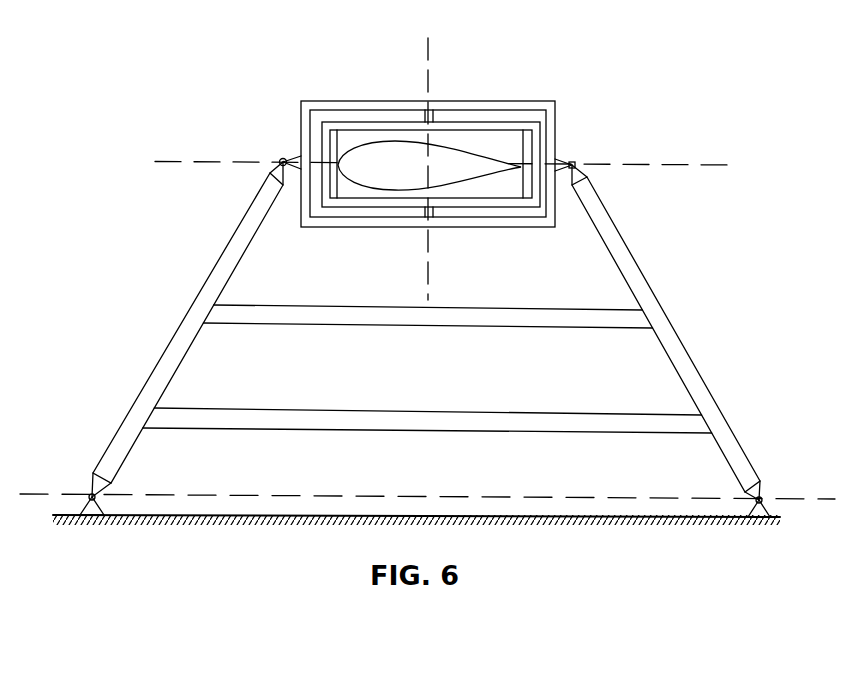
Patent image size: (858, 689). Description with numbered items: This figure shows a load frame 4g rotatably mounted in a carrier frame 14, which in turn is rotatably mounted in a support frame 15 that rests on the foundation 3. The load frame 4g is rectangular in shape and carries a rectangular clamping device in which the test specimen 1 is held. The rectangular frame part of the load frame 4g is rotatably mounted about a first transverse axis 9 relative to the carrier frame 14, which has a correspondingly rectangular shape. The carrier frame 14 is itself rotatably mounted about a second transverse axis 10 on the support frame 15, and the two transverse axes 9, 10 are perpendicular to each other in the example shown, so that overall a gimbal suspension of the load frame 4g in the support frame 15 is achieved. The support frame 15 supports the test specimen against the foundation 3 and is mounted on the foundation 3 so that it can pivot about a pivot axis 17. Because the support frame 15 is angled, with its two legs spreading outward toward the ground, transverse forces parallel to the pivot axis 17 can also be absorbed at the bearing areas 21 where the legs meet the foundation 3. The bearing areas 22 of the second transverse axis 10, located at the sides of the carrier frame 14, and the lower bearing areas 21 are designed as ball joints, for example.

The wind turbine blade 1 is at (445, 147).
The foundation 3 is at (412, 514).
The load frame 4g is at (534, 133).
The first transverse axis 9 is at (432, 47).
The second transverse axis 10 is at (728, 165).
The carrier frame 14 is at (343, 101).
The support frame 15 is at (670, 313).
The pivot axis 17 is at (827, 495).
The bearing areas 21 is at (89, 495).
The bearing areas 22 is at (280, 161).